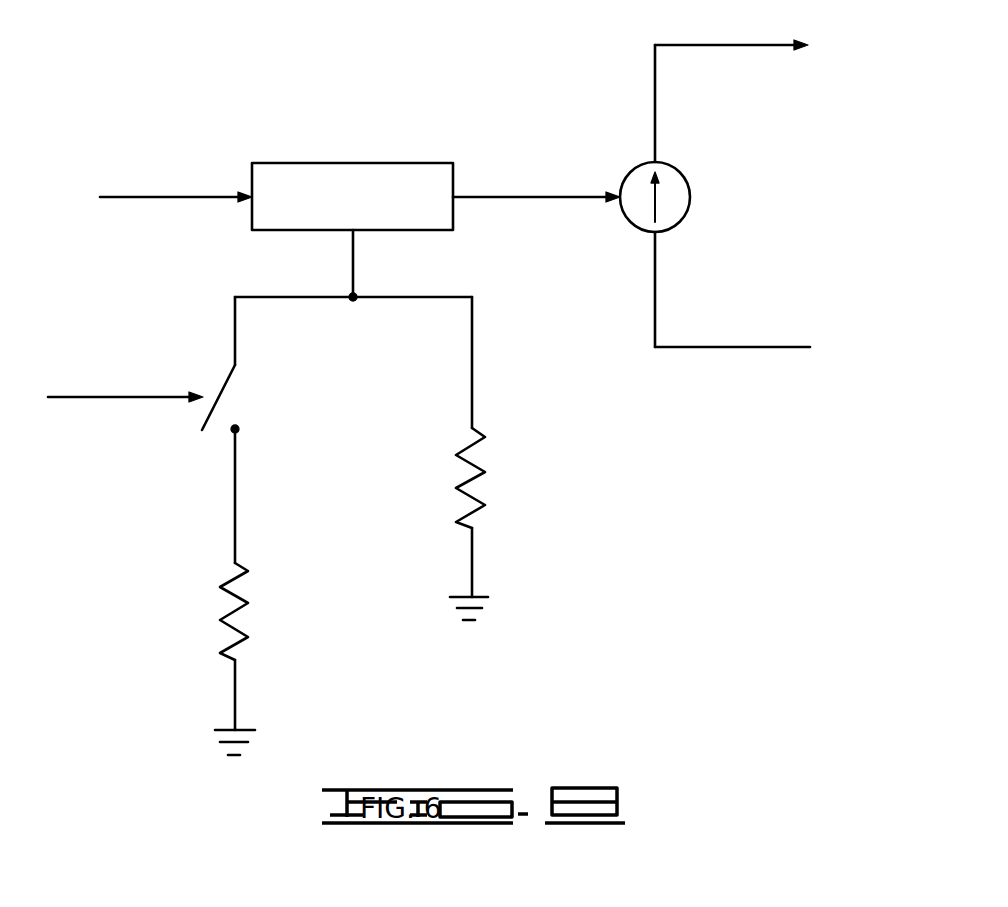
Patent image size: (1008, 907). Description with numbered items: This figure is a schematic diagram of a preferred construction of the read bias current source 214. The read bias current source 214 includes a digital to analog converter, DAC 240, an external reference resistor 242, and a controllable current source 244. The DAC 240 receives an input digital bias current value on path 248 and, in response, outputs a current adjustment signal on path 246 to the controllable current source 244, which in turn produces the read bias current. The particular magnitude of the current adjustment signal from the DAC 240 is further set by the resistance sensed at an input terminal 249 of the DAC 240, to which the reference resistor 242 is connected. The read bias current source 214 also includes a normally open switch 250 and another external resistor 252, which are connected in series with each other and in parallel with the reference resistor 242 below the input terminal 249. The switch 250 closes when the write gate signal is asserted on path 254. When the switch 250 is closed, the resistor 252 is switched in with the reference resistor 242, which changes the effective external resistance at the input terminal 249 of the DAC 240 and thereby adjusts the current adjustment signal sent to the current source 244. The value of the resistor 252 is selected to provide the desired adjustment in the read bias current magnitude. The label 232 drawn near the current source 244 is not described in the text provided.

The read bias current source 214 is at (246, 61).
The digital to analog converter (DAC) 240 is at (342, 163).
The path for input digital bias current value 248 is at (150, 197).
The path for current adjustment signal 246 is at (500, 197).
The input terminal of the DAC 249 is at (369, 249).
The current source circuit 232 is at (749, 234).
The controllable current source 244 is at (690, 193).
The switch (S1) 250 is at (222, 390).
The path for write gate signal 254 is at (118, 398).
The external resistor (R1) 252 is at (248, 570).
The external reference resistor (R_REF) 242 is at (482, 435).